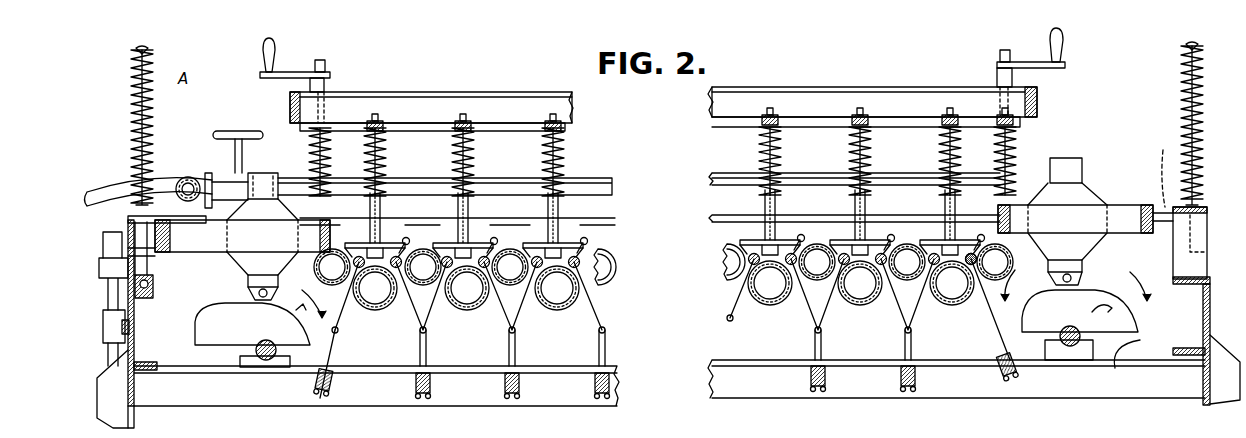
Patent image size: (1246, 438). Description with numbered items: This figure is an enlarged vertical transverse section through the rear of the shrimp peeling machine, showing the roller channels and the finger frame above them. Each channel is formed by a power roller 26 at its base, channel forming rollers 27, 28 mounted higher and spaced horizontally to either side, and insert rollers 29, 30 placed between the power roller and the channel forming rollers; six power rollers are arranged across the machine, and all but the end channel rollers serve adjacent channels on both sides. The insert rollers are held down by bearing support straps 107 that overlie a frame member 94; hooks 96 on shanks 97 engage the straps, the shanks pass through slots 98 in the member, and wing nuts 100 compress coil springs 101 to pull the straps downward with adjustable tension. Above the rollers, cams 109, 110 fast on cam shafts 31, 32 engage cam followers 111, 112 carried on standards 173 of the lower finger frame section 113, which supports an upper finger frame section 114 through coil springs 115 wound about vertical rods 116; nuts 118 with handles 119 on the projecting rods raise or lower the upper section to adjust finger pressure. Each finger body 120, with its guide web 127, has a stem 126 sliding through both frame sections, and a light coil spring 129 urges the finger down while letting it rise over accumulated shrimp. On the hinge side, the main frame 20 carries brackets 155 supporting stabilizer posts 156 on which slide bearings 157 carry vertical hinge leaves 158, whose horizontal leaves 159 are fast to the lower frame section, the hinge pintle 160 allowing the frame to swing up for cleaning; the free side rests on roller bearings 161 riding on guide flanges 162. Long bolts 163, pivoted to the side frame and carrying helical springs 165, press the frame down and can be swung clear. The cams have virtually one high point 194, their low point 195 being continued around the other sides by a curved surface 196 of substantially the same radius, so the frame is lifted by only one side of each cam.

The main frame 20 is at (136, 357).
The power roller 26 is at (940, 308).
The channel forming roller 27 is at (316, 286).
The channel forming roller 28 is at (436, 228).
The insert roller 29 is at (362, 228).
The insert roller 30 is at (980, 212).
The cam shaft 31 is at (1070, 346).
The cam shaft 32 is at (268, 360).
The frame member 94 is at (563, 392).
The hook 96 is at (880, 322).
The shank 97 is at (515, 350).
The slot 98 is at (610, 362).
The wing nut 100 is at (330, 405).
The coil spring 101 is at (430, 395).
The bearing support strap 107 is at (590, 313).
The cam 109 is at (1114, 325).
The cam 110 is at (228, 331).
The cam follower 111 is at (1082, 302).
The cam follower 112 is at (252, 298).
The lower finger frame section 113 is at (1122, 210).
The upper finger frame section 114 is at (735, 102).
The coil spring 115 is at (314, 158).
The vertical rod 116 is at (326, 62).
The nut 118 is at (323, 86).
The handle 119 is at (262, 52).
The finger body 120 is at (776, 240).
The stem 126 is at (462, 118).
The guide web 127 is at (757, 230).
The light coil spring 129 is at (460, 156).
The bracket 155 is at (118, 378).
The stabilizer post 156 is at (110, 298).
The slide bearing 157 is at (112, 268).
The vertical hinge leaf 158 is at (137, 262).
The horizontal hinge leaf 159 is at (176, 258).
The hinge pintle 160 is at (135, 240).
The roller bearing 161 is at (1152, 172).
The guide flange 162 is at (1185, 242).
The long bolt 163 is at (136, 58).
The helical spring 165 is at (130, 97).
The standard 173 is at (1061, 219).
The high point 194 is at (1076, 314).
The low point 195 is at (272, 319).
The curved surface 196 is at (290, 324).